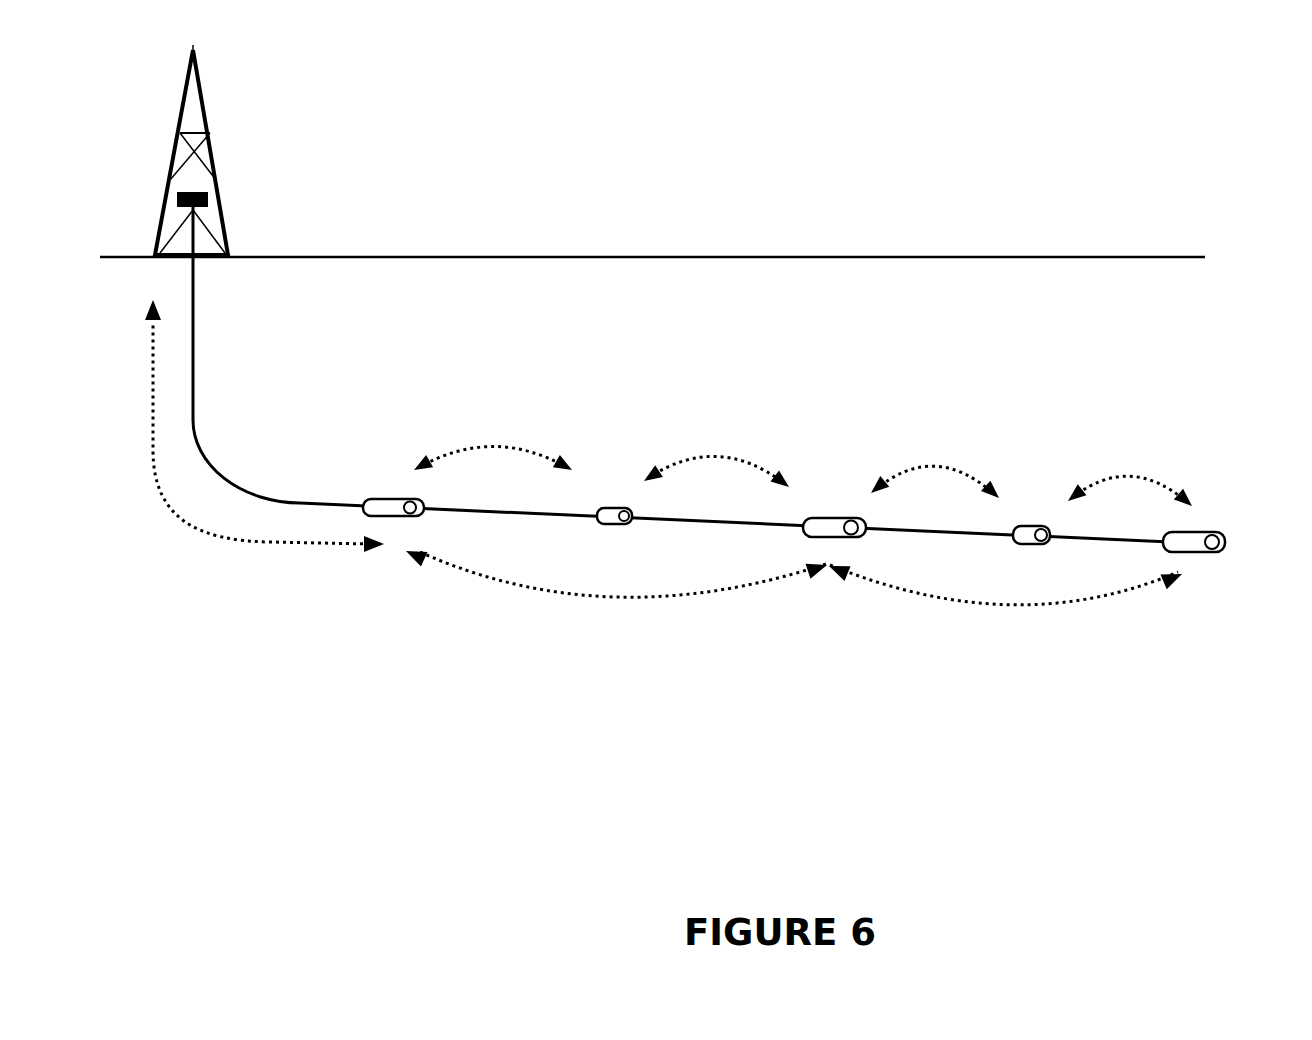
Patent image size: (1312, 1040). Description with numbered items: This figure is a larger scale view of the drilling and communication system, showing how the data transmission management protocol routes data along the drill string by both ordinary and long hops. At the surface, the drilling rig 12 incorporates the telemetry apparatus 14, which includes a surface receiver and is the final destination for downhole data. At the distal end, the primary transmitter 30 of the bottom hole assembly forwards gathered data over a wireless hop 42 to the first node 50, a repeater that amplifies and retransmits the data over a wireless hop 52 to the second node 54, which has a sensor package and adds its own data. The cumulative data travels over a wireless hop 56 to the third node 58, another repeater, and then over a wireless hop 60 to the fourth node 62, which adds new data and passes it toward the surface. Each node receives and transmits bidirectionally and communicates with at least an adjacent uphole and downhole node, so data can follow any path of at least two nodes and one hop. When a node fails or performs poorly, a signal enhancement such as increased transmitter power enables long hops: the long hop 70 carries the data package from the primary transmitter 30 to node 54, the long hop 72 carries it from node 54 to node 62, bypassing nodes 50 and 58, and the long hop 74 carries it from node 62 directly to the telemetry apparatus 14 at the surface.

The drilling rig 12 is at (216, 143).
The telemetry apparatus 14 is at (212, 221).
The primary transmitter 30 is at (1234, 516).
The wireless hop 42 is at (1130, 480).
The first node 50 is at (1032, 487).
The wireless hop 52 is at (935, 470).
The second node 54 is at (836, 469).
The wireless hop 56 is at (716, 459).
The third node 58 is at (617, 463).
The wireless hop 60 is at (493, 447).
The fourth node 62 is at (392, 460).
The long hop 70 is at (1005, 603).
The long hop 72 is at (616, 586).
The long hop 74 is at (254, 426).